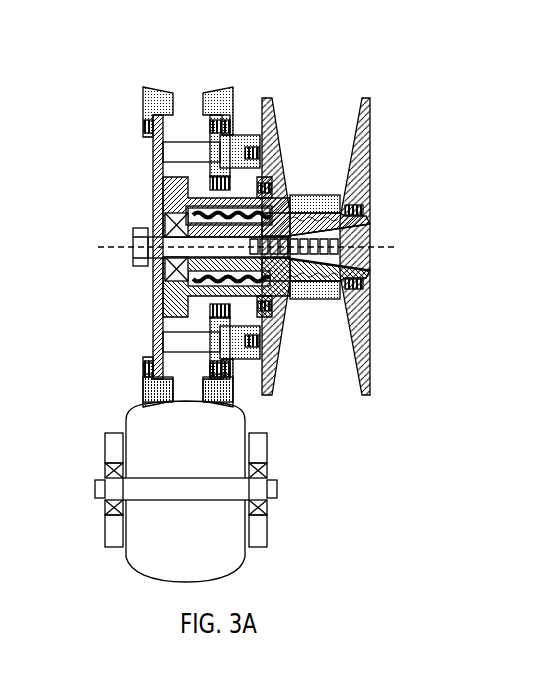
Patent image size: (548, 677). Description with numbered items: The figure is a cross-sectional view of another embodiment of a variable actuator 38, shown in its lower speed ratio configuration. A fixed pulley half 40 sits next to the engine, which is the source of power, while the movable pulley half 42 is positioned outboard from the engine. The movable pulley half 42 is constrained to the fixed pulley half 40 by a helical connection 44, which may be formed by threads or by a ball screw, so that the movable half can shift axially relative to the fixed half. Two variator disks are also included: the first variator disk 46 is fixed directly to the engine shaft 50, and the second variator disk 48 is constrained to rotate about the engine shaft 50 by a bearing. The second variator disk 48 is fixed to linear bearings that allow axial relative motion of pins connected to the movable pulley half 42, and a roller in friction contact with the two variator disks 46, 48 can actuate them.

The variable actuator 38 is at (131, 61).
The fixed pulley half 40 is at (366, 124).
The movable pulley half 42 is at (269, 112).
The helical connection 44 is at (186, 213).
The variator disk 46 is at (150, 391).
The variator disk 48 is at (231, 391).
The engine shaft 50 is at (357, 249).